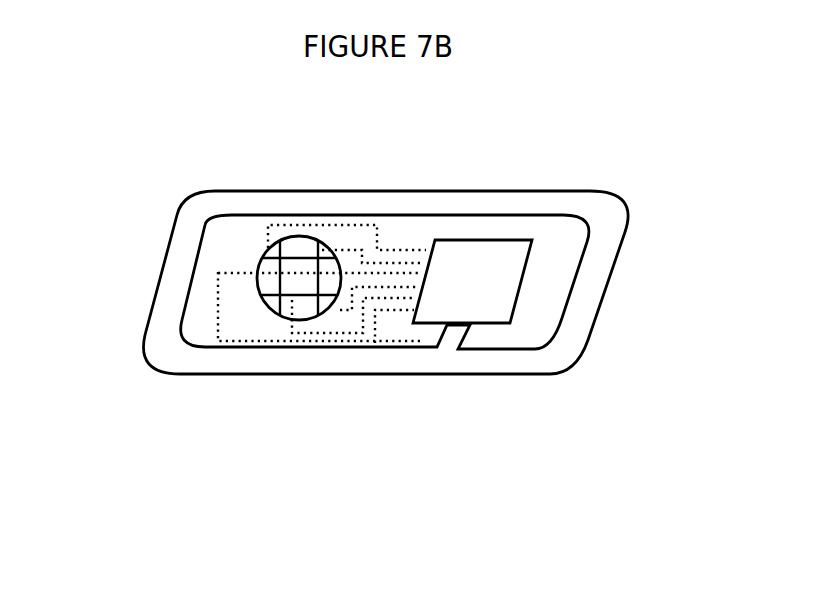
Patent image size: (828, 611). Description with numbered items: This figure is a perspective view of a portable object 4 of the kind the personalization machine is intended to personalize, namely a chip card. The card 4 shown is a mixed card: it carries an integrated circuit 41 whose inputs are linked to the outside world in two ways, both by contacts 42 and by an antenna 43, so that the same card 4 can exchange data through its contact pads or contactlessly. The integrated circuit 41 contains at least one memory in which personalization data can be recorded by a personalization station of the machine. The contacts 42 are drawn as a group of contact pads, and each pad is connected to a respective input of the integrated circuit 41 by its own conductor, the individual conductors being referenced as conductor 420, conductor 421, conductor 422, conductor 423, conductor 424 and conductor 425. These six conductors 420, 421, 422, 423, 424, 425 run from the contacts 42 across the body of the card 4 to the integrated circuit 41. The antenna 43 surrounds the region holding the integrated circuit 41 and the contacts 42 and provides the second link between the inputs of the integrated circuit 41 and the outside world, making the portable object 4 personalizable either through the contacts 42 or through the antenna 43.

The portable object 4 is at (160, 224).
The integrated circuit 41 is at (522, 252).
The contacts 42 is at (293, 285).
The antenna 43 is at (573, 277).
The conductor 420 is at (242, 347).
The conductor 421 is at (303, 333).
The conductor 422 is at (338, 310).
The conductor 423 is at (402, 275).
The conductor 424 is at (353, 250).
The conductor 425 is at (293, 224).